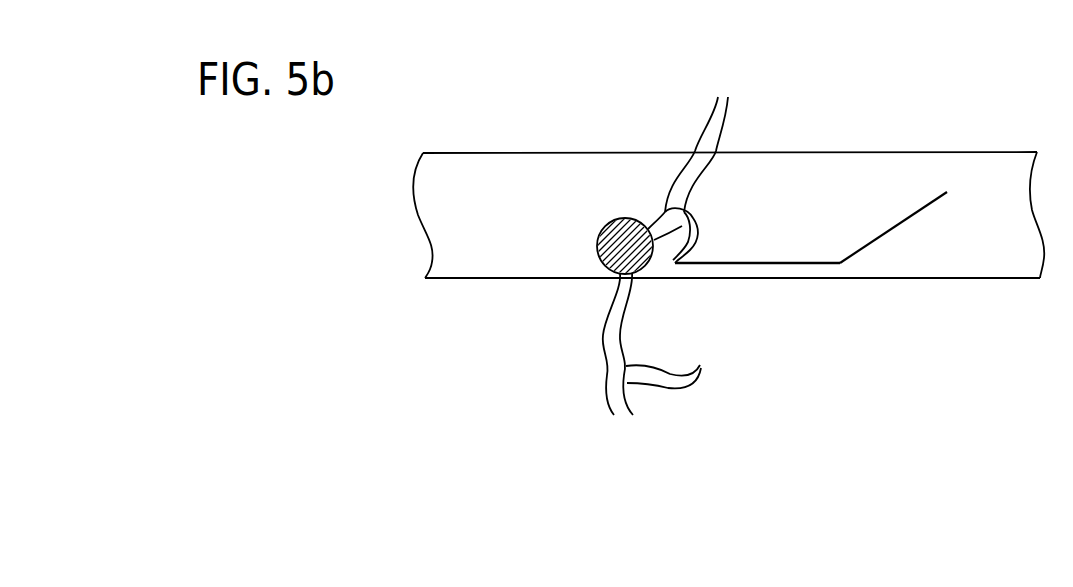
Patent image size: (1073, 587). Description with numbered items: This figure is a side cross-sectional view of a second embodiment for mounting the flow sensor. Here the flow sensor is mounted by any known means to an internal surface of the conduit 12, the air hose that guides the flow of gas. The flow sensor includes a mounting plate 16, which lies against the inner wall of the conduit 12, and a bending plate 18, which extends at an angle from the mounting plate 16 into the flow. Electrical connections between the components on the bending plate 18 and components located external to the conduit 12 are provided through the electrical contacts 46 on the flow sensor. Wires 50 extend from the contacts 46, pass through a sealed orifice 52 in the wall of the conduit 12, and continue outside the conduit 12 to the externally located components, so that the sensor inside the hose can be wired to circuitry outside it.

The conduit 12 is at (912, 152).
The mounting plate 16 is at (782, 263).
The bending plate 18 is at (922, 208).
The electrical contacts 46 is at (678, 263).
The wires 50 is at (671, 243).
The sealed orifice 52 is at (598, 260).